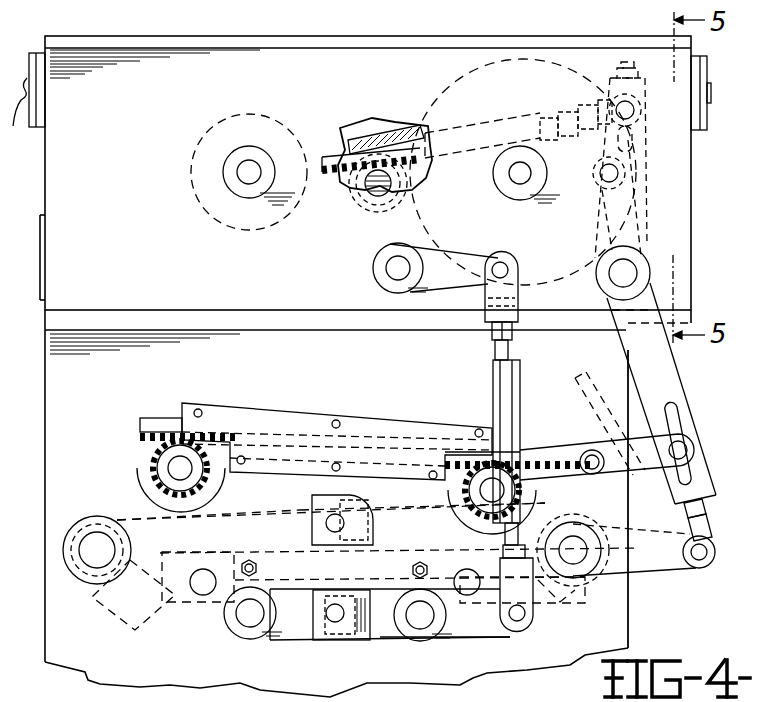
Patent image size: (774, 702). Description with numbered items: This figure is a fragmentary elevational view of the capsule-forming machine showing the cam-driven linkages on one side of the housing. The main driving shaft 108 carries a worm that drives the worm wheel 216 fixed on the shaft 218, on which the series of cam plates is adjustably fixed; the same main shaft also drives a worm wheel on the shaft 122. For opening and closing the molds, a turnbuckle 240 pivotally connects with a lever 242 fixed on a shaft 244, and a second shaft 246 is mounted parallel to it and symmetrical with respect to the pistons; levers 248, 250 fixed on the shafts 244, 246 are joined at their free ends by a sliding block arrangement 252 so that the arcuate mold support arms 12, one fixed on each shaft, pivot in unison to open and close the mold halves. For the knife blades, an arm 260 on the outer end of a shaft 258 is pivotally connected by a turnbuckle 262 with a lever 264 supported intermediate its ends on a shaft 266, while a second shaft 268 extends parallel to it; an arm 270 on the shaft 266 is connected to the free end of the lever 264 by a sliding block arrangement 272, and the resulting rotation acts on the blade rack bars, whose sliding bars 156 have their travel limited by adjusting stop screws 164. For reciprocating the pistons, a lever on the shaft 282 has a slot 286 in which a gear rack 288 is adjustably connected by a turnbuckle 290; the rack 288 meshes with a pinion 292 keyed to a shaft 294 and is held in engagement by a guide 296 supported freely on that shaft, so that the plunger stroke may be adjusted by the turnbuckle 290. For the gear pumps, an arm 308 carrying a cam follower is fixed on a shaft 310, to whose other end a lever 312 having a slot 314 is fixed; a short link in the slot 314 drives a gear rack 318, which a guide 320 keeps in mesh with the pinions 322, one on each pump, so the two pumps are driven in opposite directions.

The mold support arm 12 is at (110, 620).
The main driving shaft 108 is at (24, 103).
The shaft 122 is at (248, 164).
The bar 156 is at (200, 596).
The adjusting stop screw 164 is at (257, 569).
The worm wheel 216 is at (665, 440).
The shaft 218 is at (522, 185).
The turnbuckle 240 is at (707, 524).
The lever 242 is at (672, 570).
The shaft 244 is at (578, 540).
The second shaft 246 is at (94, 540).
The lever 248 is at (425, 510).
The lever 250 is at (266, 512).
The sliding block arrangement 252 is at (345, 508).
The shaft 258 is at (386, 262).
The arm 260 is at (470, 240).
The turnbuckle 262 is at (513, 377).
The lever 264 is at (471, 638).
The shaft 266 is at (418, 635).
The second shaft 268 is at (248, 635).
The arm 270 is at (283, 640).
The sliding block arrangement 272 is at (343, 642).
The shaft 282 is at (628, 162).
The slot 286 is at (640, 113).
The gear rack 288 is at (482, 125).
The turnbuckle 290 is at (562, 110).
The pinion 292 is at (352, 183).
The shaft 294 is at (368, 198).
The guide 296 is at (420, 104).
The arm 308 is at (636, 210).
The shaft 310 is at (632, 265).
The lever 312 is at (668, 372).
The slot 314 is at (690, 470).
The gear rack 318 is at (565, 427).
The guide 320 is at (396, 408).
The pinion 322 is at (152, 456).